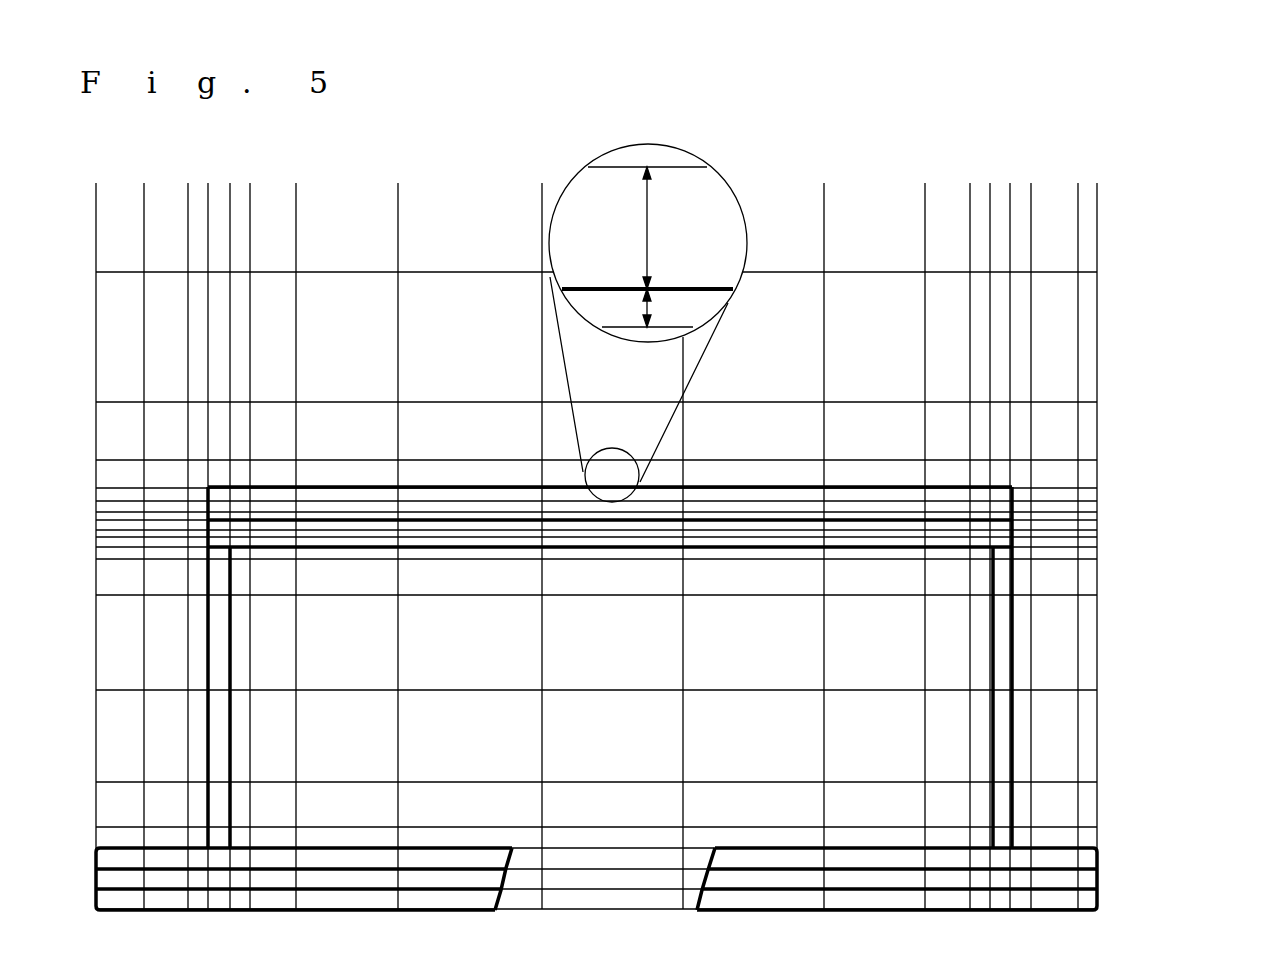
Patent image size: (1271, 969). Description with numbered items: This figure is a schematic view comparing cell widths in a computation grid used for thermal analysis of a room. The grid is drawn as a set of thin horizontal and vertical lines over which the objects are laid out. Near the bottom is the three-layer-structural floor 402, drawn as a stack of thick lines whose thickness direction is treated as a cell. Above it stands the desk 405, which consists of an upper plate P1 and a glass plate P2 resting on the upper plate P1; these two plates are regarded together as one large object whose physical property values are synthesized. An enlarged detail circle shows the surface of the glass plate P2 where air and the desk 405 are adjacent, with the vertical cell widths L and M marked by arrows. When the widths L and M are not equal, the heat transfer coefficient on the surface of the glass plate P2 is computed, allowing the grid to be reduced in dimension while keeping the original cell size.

The floor 402 is at (1103, 847).
The desk 405 is at (1167, 465).
The upper plate P1 is at (1013, 537).
The glass plate P2 is at (1013, 505).
The cell width M is at (630, 228).
The cell width L is at (632, 308).